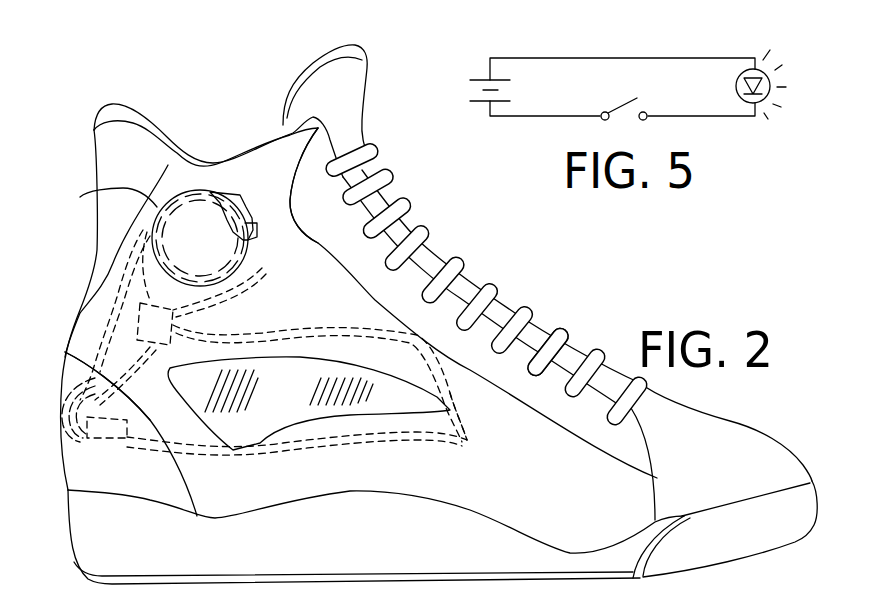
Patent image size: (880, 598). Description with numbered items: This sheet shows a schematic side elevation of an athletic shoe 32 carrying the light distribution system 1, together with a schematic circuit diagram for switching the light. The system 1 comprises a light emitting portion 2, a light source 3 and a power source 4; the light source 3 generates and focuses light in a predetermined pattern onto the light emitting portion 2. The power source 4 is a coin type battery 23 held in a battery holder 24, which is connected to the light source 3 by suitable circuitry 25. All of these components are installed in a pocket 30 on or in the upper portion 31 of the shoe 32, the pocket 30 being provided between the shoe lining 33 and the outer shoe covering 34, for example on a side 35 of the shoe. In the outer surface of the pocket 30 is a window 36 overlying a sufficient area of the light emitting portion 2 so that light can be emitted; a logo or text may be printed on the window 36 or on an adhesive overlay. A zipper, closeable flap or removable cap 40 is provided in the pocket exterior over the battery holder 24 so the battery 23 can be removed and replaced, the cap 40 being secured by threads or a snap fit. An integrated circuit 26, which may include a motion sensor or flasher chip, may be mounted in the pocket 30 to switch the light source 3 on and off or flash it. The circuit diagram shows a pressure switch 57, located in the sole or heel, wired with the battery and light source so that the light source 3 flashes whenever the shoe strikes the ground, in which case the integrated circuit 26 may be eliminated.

In FIG. 2, the light distribution system 1 is at (120, 450).
In FIG. 2, the light emitting portion 2 is at (445, 420).
In FIG. 2, the light source 3 is at (67, 433).
In FIG. 5, the light source 3 is at (765, 58).
In FIG. 2, the power source 4 is at (252, 222).
In FIG. 5, the power source 4 is at (472, 72).
In FIG. 2, the coin type battery 23 is at (217, 195).
In FIG. 2, the battery holder 24 is at (315, 185).
In FIG. 5, the circuitry 25 is at (620, 52).
In FIG. 2, the integrated circuit 26 is at (143, 322).
In FIG. 2, the pocket 30 is at (283, 460).
In FIG. 2, the upper portion 31 is at (413, 270).
In FIG. 2, the shoe 32 is at (488, 264).
In FIG. 2, the shoe lining 33 is at (248, 205).
In FIG. 2, the outer shoe covering 34 is at (301, 140).
In FIG. 2, the side 35 is at (548, 326).
In FIG. 2, the window 36 is at (385, 405).
In FIG. 2, the removable cap 40 is at (93, 192).
In FIG. 5, the pressure switch 57 is at (655, 124).